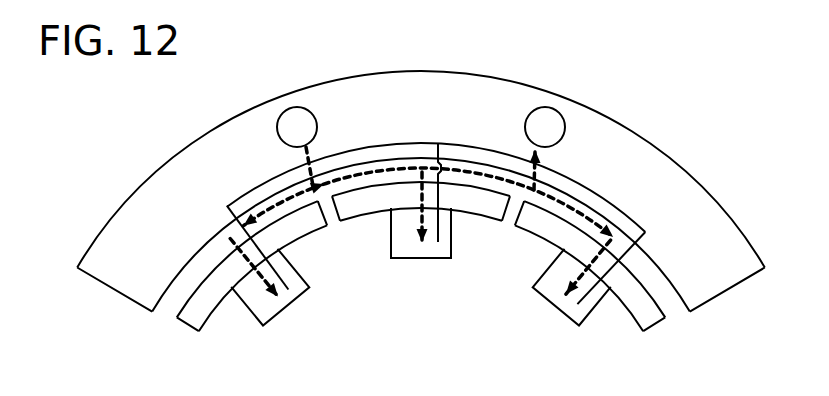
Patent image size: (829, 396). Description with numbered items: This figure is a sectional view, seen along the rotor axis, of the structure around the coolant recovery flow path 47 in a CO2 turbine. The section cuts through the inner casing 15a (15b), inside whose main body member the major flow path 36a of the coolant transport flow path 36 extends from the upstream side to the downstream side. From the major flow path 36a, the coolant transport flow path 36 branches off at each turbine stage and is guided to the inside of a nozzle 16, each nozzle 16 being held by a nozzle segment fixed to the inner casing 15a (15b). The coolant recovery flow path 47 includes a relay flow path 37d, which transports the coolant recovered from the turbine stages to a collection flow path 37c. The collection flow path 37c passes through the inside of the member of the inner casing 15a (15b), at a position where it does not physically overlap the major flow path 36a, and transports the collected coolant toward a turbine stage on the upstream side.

The inner casing 15a is at (407, 98).
The inner casing 15b is at (421, 235).
The nozzle 16 is at (283, 294).
The coolant transport flow path 36 is at (227, 223).
The major flow path 36a is at (293, 117).
The collection flow path 37c is at (545, 118).
The relay flow path 37d is at (258, 241).
The coolant recovery flow path 47 is at (607, 197).